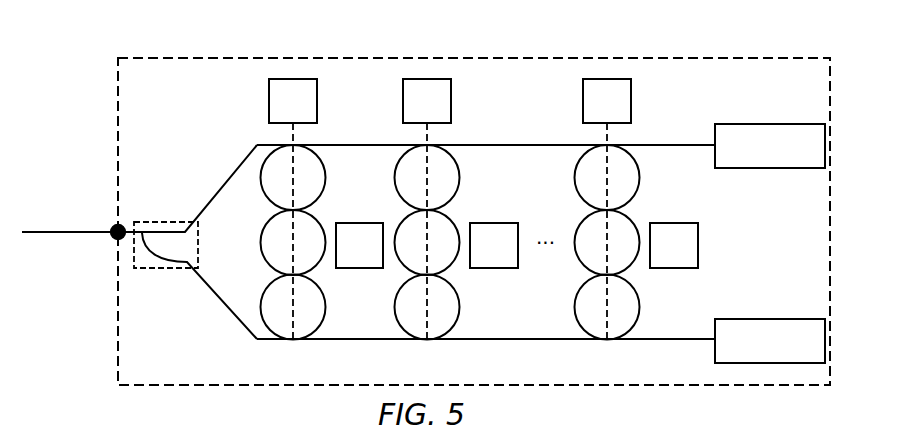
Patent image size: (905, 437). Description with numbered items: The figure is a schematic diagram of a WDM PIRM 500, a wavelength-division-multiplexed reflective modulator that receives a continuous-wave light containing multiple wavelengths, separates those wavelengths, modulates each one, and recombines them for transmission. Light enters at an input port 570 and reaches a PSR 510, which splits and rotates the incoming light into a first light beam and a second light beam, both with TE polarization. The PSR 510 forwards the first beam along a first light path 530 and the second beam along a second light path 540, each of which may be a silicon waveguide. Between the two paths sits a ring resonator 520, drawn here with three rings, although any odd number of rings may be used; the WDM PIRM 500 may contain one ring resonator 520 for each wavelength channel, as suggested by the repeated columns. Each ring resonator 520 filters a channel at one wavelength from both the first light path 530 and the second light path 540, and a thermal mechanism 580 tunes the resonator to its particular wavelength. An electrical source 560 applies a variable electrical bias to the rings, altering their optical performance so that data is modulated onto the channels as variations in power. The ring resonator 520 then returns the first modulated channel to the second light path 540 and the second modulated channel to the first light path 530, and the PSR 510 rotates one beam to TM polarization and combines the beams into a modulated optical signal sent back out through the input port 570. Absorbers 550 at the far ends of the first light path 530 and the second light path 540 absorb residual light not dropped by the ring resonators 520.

The WDM PIRM 500 is at (208, 58).
The PSR 510 is at (149, 222).
The ring resonator 520 is at (325, 181).
The first light path 530 is at (495, 145).
The second light path 540 is at (495, 340).
The absorbers 550 is at (770, 243).
The electrical source 560 is at (450, 209).
The input port 570 is at (110, 245).
The thermal mechanism 580 is at (517, 245).